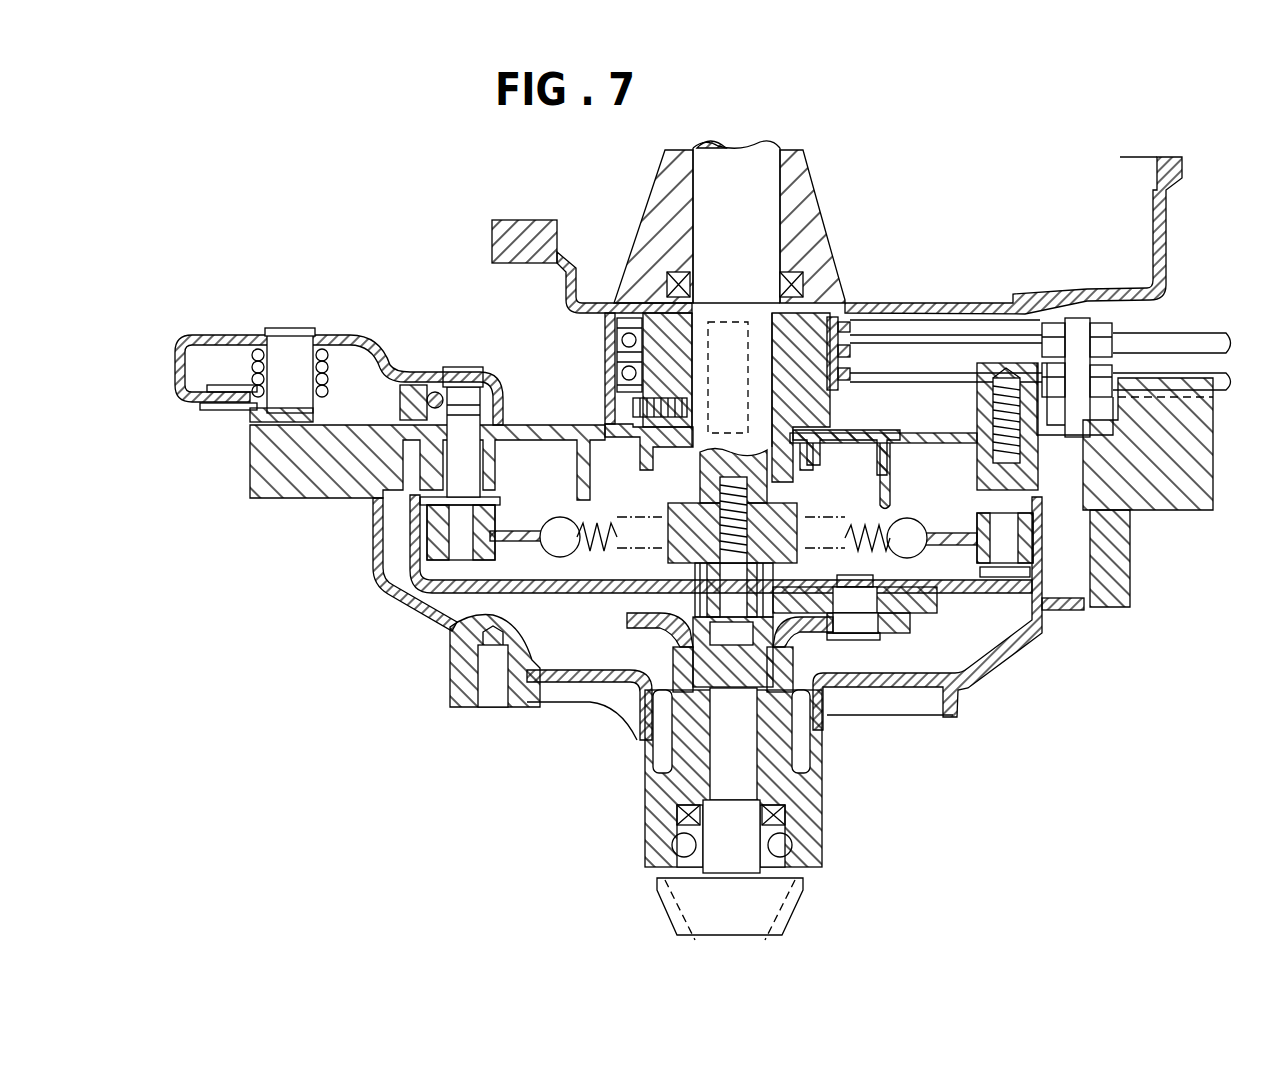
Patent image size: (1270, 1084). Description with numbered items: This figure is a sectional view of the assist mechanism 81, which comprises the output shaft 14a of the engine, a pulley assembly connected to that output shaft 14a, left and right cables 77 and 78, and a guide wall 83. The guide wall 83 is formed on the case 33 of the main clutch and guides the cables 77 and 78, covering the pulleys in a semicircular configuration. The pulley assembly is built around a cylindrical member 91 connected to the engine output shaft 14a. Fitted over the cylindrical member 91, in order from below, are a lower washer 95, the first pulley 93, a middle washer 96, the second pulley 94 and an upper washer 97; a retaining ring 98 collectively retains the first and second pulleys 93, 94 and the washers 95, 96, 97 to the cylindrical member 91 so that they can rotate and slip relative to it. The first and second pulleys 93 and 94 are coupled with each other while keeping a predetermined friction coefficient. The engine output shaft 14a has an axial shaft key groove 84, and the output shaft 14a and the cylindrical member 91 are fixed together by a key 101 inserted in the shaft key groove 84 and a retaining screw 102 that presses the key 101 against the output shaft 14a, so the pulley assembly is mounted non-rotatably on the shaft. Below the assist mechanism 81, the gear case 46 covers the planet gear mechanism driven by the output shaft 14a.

The assist mechanism 81 is at (372, 112).
The output shaft 14a is at (757, 162).
The guide wall 83 is at (803, 270).
The key 101 is at (707, 308).
The second pulley 94 is at (592, 320).
The right cable 78 is at (600, 328).
The left cable 77 is at (606, 352).
The retaining screw 102 is at (612, 407).
The first pulley 93 is at (618, 335).
The lower washer 95 is at (853, 390).
The retaining ring 98 is at (843, 322).
The upper washer 97 is at (850, 346).
The middle washer 96 is at (853, 372).
The cylindrical member 91 is at (840, 410).
The shaft key groove 84 is at (664, 473).
The case 33 is at (307, 500).
The gear case 46 is at (1020, 655).